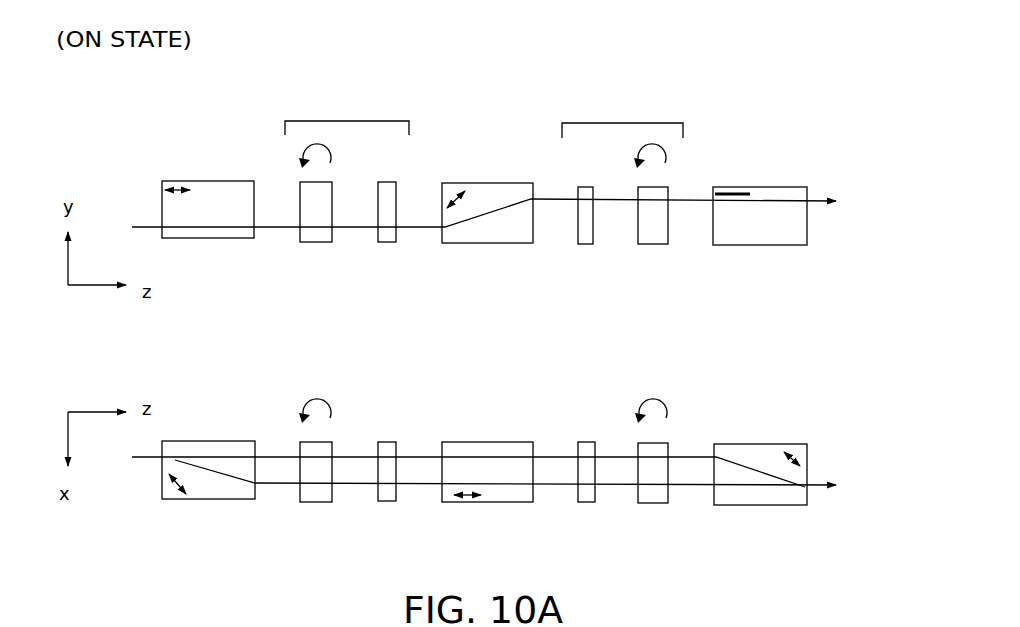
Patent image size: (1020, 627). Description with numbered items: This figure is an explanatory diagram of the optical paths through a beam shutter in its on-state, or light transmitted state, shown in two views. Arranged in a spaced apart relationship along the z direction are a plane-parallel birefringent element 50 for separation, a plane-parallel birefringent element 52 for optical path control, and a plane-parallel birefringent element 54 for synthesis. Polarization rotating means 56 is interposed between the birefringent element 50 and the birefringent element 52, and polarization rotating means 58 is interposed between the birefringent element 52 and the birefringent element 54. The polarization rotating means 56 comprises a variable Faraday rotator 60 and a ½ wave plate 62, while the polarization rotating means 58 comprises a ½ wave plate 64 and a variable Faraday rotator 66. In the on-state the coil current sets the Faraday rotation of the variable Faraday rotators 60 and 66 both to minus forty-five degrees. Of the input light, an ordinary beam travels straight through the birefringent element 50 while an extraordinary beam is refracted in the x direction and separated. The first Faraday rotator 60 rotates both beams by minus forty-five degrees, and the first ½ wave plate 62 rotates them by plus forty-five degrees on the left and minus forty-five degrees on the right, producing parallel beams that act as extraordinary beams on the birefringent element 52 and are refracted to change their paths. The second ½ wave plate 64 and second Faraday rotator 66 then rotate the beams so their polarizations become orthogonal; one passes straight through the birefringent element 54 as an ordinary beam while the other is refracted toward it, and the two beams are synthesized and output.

The birefringent element for separation 50 is at (229, 173).
The birefringent element for optical path control 52 is at (503, 182).
The birefringent element for synthesis 54 is at (773, 185).
The polarization rotating means 56 is at (347, 114).
The polarization rotating means 58 is at (622, 116).
The variable Faraday rotator 60 is at (316, 251).
The ½ wave plate 62 is at (391, 250).
The ½ wave plate 64 is at (587, 250).
The variable Faraday rotator 66 is at (656, 252).